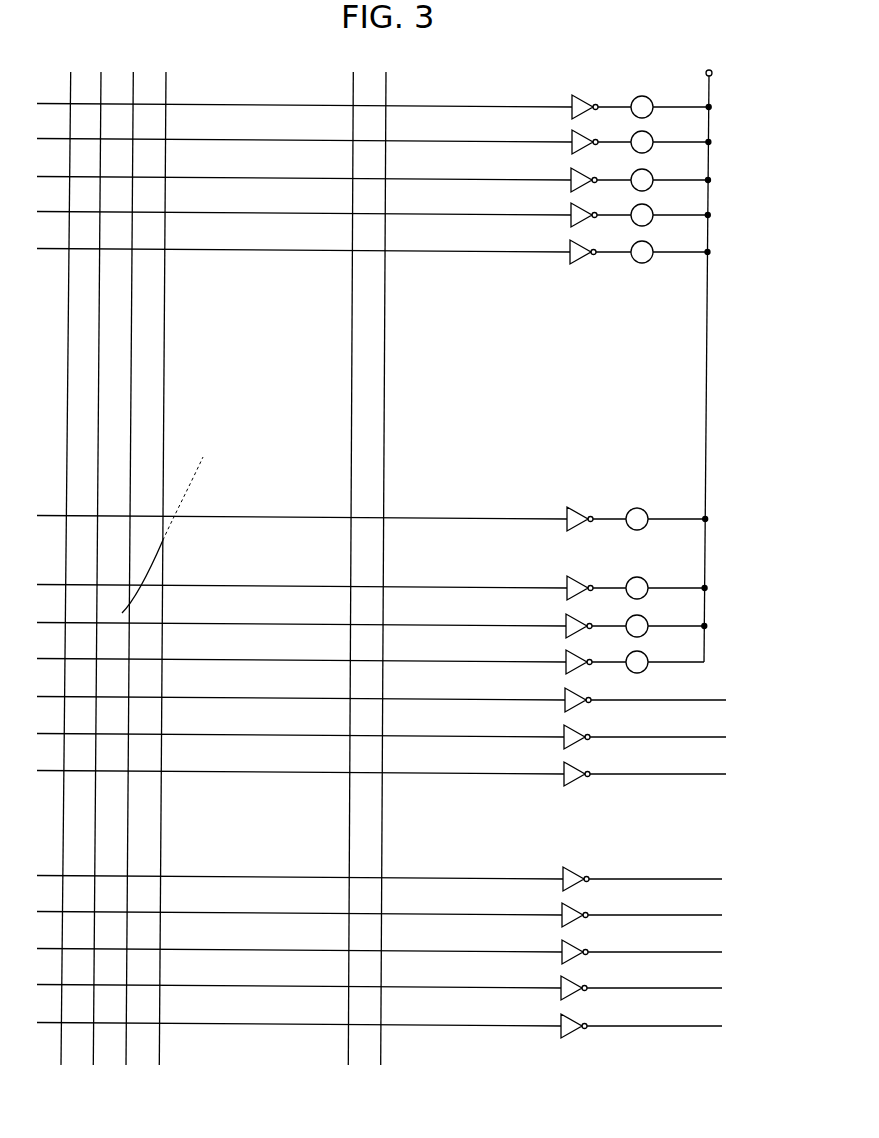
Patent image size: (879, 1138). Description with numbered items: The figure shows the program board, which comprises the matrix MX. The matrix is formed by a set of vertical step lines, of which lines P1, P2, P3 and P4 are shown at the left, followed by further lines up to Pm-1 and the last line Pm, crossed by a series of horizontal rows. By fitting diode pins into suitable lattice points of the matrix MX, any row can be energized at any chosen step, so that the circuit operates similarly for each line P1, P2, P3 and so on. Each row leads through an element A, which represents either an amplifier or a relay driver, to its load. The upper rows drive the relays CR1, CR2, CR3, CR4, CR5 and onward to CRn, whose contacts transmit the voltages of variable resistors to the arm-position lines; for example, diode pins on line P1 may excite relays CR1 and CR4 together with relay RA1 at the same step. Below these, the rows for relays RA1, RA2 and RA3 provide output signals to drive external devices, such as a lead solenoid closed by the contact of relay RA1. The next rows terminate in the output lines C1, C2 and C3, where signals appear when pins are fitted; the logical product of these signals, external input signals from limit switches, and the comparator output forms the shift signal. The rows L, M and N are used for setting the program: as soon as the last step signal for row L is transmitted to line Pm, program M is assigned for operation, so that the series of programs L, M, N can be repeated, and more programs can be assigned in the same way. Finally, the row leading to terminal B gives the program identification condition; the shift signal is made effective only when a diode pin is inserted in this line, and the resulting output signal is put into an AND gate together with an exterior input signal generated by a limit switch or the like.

The line P1 is at (64, 586).
The line P2 is at (93, 586).
The line P3 is at (129, 586).
The line P4 is at (166, 586).
The line Pm-1 is at (346, 586).
The line Pm is at (390, 586).
The matrix MX is at (174, 521).
The amplifier or relay driver A is at (570, 103).
The relay CR1 is at (642, 107).
The relay CR2 is at (642, 142).
The relay CR3 is at (642, 180).
The relay CR4 is at (642, 215).
The relay CR5 is at (642, 252).
The relay CRn is at (637, 519).
The relay RA1 is at (637, 588).
The relay RA2 is at (637, 626).
The relay RA3 is at (637, 662).
The output line C1 is at (398, 701).
The output line C2 is at (398, 738).
The output line C3 is at (398, 775).
The program row L is at (390, 879).
The program row M is at (393, 915).
The program row N is at (392, 952).
The terminal B is at (391, 988).